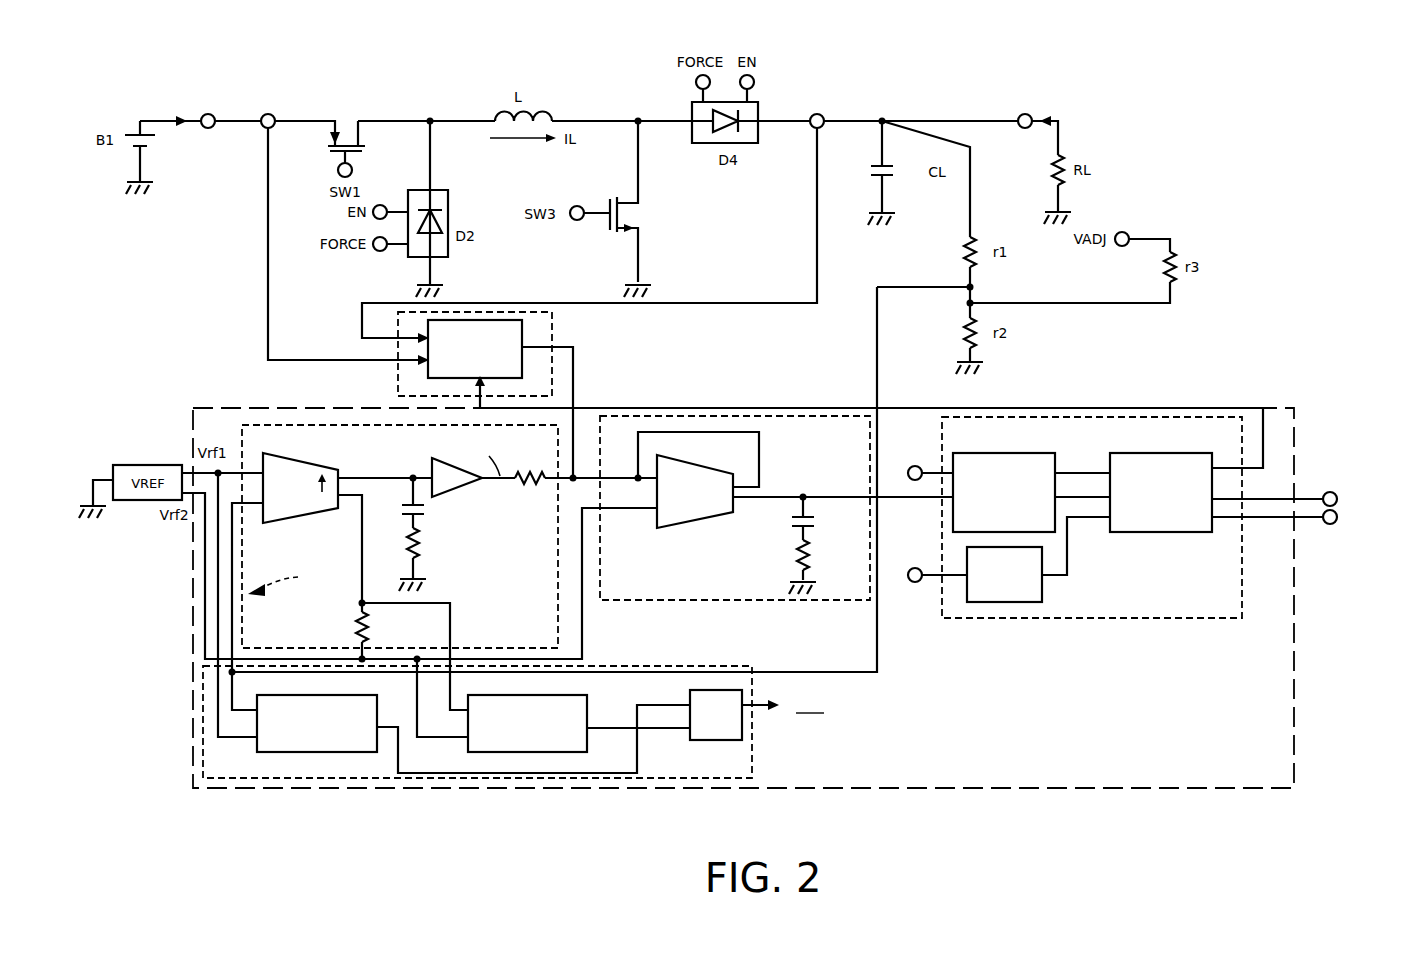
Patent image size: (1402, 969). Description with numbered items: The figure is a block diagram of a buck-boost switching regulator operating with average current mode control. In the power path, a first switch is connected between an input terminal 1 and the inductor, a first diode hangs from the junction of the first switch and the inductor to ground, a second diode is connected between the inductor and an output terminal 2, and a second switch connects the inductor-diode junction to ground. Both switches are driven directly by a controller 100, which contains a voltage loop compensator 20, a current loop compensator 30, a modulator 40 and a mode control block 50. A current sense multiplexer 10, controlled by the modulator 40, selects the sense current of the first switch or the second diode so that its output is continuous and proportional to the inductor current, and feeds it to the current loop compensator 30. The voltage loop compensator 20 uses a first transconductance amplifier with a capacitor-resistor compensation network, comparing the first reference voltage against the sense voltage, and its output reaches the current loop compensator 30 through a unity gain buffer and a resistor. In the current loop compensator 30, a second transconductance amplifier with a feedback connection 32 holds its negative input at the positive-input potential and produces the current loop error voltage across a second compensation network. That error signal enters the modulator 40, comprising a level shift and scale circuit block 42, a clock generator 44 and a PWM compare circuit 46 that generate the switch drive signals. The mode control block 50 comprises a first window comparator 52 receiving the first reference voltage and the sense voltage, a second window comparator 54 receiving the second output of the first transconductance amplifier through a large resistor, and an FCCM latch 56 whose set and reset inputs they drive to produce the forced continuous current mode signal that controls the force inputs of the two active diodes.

The input terminal 1 is at (208, 128).
The output terminal 2 is at (1019, 113).
The current sense multiplexer 10 is at (552, 322).
The voltage loop compensator 20 is at (250, 425).
The current loop compensator 30 is at (776, 481).
The feedback connection 32 is at (748, 432).
The modulator 40 is at (1138, 514).
The level shift and scale circuit block 42 is at (1004, 453).
The clock generator 44 is at (1008, 602).
The PWM compare circuit 46 is at (1118, 532).
The mode control block 50 is at (510, 748).
The first window comparator 52 is at (322, 752).
The second window comparator 54 is at (548, 752).
The FCCM latch 56 is at (718, 740).
The controller 100 is at (1294, 700).